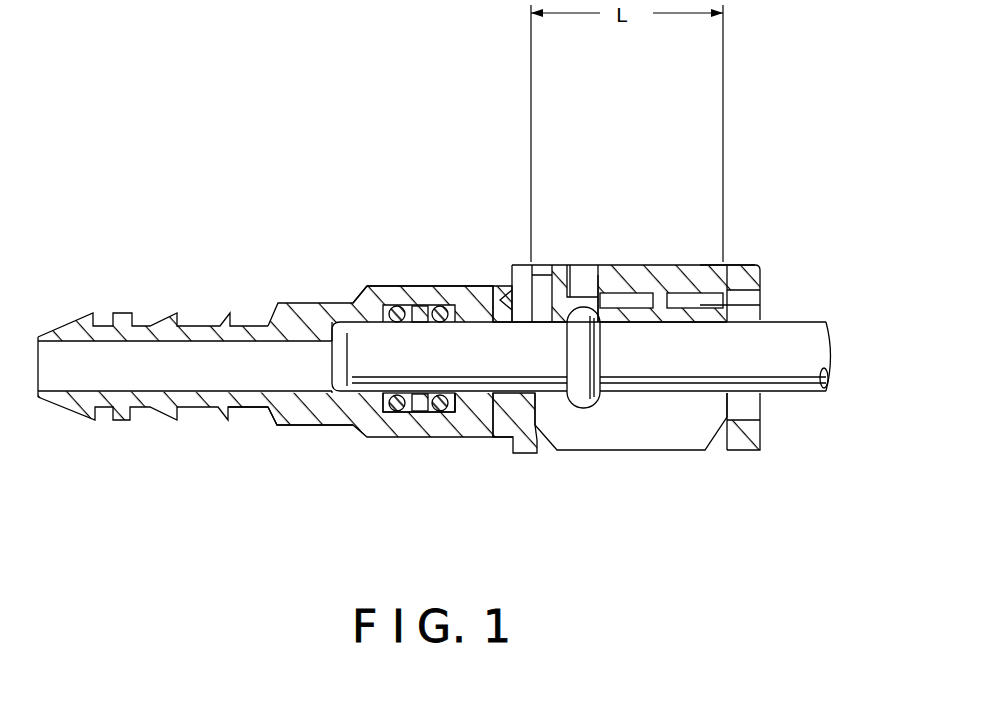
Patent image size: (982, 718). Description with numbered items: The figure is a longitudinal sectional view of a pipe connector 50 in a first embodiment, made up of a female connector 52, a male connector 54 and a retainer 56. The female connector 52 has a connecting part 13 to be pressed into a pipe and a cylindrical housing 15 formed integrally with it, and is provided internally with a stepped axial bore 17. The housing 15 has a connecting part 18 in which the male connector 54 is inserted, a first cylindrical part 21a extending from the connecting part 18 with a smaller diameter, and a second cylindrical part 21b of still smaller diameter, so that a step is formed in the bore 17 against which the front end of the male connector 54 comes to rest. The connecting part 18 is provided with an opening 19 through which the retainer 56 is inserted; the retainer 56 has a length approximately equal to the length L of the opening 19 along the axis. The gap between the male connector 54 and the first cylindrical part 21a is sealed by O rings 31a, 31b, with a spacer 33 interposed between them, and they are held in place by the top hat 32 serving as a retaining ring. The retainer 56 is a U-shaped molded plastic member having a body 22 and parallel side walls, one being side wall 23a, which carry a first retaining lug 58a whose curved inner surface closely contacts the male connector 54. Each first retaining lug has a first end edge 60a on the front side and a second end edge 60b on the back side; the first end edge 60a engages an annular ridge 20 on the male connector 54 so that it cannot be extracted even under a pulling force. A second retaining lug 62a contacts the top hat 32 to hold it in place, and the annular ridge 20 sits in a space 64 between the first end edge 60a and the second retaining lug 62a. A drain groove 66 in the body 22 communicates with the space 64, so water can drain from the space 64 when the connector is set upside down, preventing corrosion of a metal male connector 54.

The connecting part 13 is at (185, 322).
The cylindrical housing 15 is at (427, 282).
The stepped axial bore 17 is at (262, 378).
The connecting part 18 is at (757, 267).
The opening 19 is at (648, 267).
The annular ridge 20 is at (596, 363).
The first cylindrical part 21a is at (465, 420).
The second cylindrical part 21b is at (280, 418).
The body 22 is at (673, 267).
The side wall 23a is at (617, 438).
The O ring 31a is at (393, 418).
The O ring 31b is at (443, 418).
The top hat 32 is at (490, 413).
The spacer 33 is at (377, 253).
The pipe connector 50 is at (677, 145).
The female connector 52 is at (305, 262).
The male connector 54 is at (774, 402).
The retainer 56 is at (710, 255).
The first retaining lug 58a is at (673, 322).
The first end edge 60a is at (593, 267).
The second end edge 60b is at (760, 303).
The second retaining lug 62a is at (550, 267).
The space 64 is at (568, 267).
The drain groove 66 is at (525, 262).